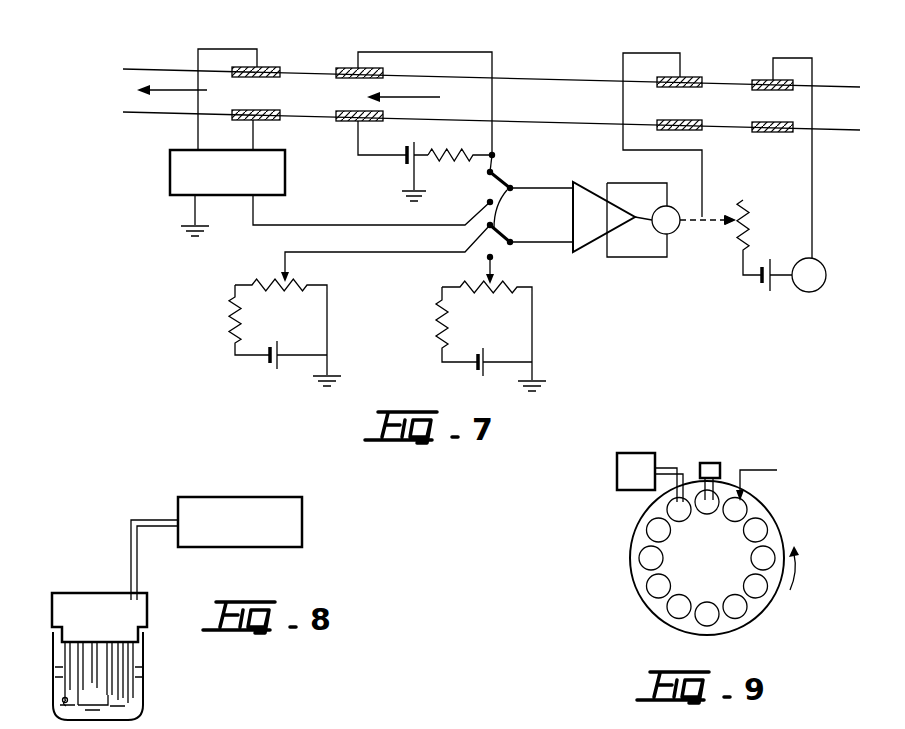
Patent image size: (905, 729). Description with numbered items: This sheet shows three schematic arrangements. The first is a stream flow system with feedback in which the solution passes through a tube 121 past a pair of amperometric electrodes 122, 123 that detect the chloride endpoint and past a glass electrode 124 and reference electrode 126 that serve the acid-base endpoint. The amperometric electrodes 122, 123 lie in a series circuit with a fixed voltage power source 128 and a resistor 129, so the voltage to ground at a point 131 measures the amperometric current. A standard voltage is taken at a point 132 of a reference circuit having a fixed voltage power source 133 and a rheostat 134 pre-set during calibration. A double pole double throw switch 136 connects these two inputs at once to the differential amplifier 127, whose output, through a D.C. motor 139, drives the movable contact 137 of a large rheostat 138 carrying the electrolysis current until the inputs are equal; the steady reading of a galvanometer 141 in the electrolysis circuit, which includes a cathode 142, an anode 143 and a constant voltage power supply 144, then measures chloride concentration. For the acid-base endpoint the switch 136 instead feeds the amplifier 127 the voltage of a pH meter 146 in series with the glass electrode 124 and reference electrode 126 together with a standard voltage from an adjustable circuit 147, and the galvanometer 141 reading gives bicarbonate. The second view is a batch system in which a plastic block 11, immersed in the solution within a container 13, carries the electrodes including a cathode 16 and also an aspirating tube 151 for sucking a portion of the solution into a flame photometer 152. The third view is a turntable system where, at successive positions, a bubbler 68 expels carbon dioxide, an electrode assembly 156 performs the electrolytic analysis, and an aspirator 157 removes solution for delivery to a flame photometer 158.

In FIG. 8, the plastic block 11 is at (65, 593).
In FIG. 8, the container 13 is at (143, 695).
In FIG. 9, the cathode 16 is at (640, 583).
In FIG. 9, the bubbler 68 is at (763, 471).
In FIG. 7, the tube 121 is at (540, 76).
In FIG. 7, the amperometric electrode 122 is at (342, 111).
In FIG. 7, the amperometric electrode 123 is at (378, 116).
In FIG. 7, the glass electrode 124 is at (265, 121).
In FIG. 7, the reference electrode 126 is at (247, 67).
In FIG. 7, the differential amplifier 127 is at (582, 255).
In FIG. 7, the fixed voltage power source 128 is at (406, 148).
In FIG. 7, the resistor 129 is at (446, 149).
In FIG. 7, the point 131 is at (496, 152).
In FIG. 7, the point 132 is at (292, 268).
In FIG. 7, the fixed voltage power source 133 is at (270, 365).
In FIG. 7, the rheostat 134 is at (266, 283).
In FIG. 7, the double pole double throw switch 136 is at (502, 182).
In FIG. 7, the movable contact 137 is at (728, 226).
In FIG. 7, the large rheostat 138 is at (745, 203).
In FIG. 7, the D.C. motor 139 is at (668, 258).
In FIG. 7, the galvanometer 141 is at (809, 292).
In FIG. 7, the cathode 142 is at (758, 79).
In FIG. 7, the anode 143 is at (683, 77).
In FIG. 7, the constant voltage power supply 144 is at (762, 290).
In FIG. 7, the pH meter 146 is at (170, 178).
In FIG. 7, the adjustable circuit 147 is at (440, 342).
In FIG. 8, the aspirating tube 151 is at (133, 688).
In FIG. 8, the flame photometer 152 is at (275, 497).
In FIG. 9, the electrode assembly 156 is at (715, 465).
In FIG. 9, the aspirator 157 is at (667, 470).
In FIG. 9, the flame photometer 158 is at (617, 478).